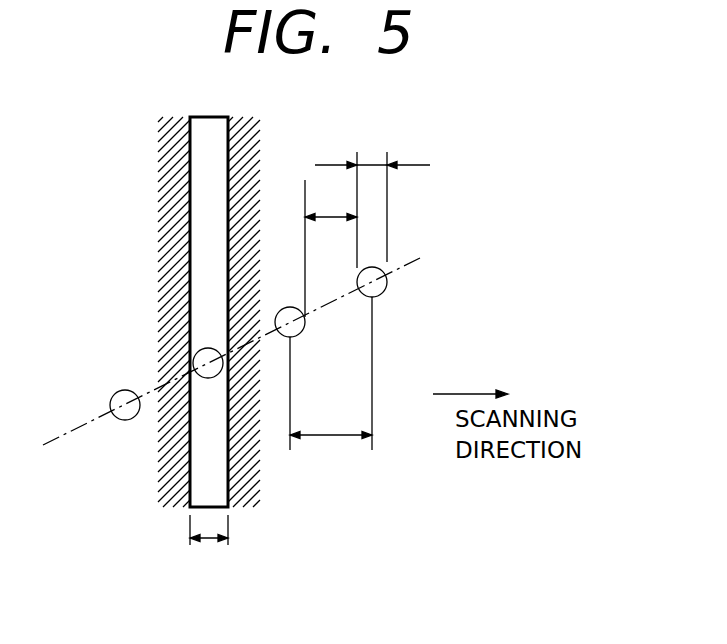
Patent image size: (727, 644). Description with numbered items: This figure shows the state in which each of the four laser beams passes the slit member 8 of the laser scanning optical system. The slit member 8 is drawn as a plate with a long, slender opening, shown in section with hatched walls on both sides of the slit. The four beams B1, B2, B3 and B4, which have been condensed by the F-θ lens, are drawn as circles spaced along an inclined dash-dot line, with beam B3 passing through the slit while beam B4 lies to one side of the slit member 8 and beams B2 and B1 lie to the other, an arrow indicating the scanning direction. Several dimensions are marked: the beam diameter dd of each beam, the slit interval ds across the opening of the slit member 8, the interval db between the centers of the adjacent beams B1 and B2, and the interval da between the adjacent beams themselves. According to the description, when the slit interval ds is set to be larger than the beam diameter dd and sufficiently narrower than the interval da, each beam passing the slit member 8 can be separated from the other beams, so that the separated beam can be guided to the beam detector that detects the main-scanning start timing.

The slit member 8 is at (165, 150).
The beam B1 is at (381, 296).
The beam B2 is at (300, 336).
The beam B3 is at (196, 355).
The beam B4 is at (114, 394).
The interval between adjacent beams da is at (331, 234).
The interval between the centers of adjacent beams db is at (331, 384).
The beam diameter dd is at (372, 192).
The slit interval ds is at (209, 547).